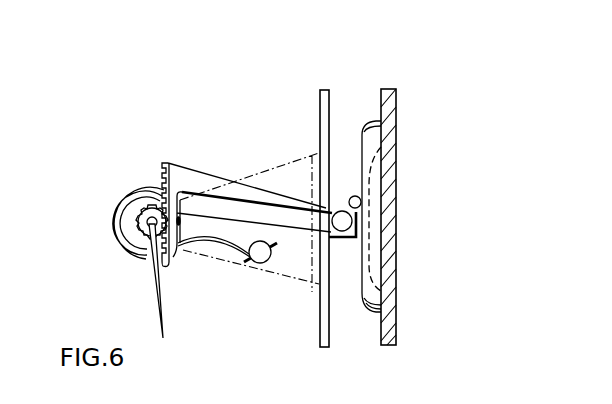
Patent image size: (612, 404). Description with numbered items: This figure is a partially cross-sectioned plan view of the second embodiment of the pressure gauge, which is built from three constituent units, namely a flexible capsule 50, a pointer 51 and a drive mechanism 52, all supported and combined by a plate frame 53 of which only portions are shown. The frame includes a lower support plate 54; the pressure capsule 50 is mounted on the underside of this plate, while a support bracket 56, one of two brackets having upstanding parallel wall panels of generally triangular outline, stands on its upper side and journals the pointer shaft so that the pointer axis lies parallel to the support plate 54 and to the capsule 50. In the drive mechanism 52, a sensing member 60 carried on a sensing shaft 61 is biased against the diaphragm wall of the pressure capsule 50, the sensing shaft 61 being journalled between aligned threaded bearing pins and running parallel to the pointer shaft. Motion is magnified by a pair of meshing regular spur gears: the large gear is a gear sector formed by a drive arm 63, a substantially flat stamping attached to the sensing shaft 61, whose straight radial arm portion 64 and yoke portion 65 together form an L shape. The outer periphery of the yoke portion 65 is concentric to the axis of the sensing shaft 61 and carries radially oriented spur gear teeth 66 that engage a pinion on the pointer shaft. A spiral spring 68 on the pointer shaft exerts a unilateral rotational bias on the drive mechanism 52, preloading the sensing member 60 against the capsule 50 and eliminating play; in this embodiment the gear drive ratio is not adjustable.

The flexible capsule 50 is at (399, 145).
The pointer 51 is at (129, 262).
The drive mechanism 52 is at (346, 118).
The plate frame 53 is at (269, 297).
The support plate 54 is at (329, 333).
The support bracket 56 is at (233, 262).
The sensing member 60 is at (361, 202).
The sensing shaft 61 is at (352, 222).
The drive arm 63 is at (212, 166).
The arm portion 64 is at (233, 190).
The yoke portion 65 is at (176, 246).
The spur gear teeth 66 is at (163, 177).
The spiral spring 68 is at (116, 212).